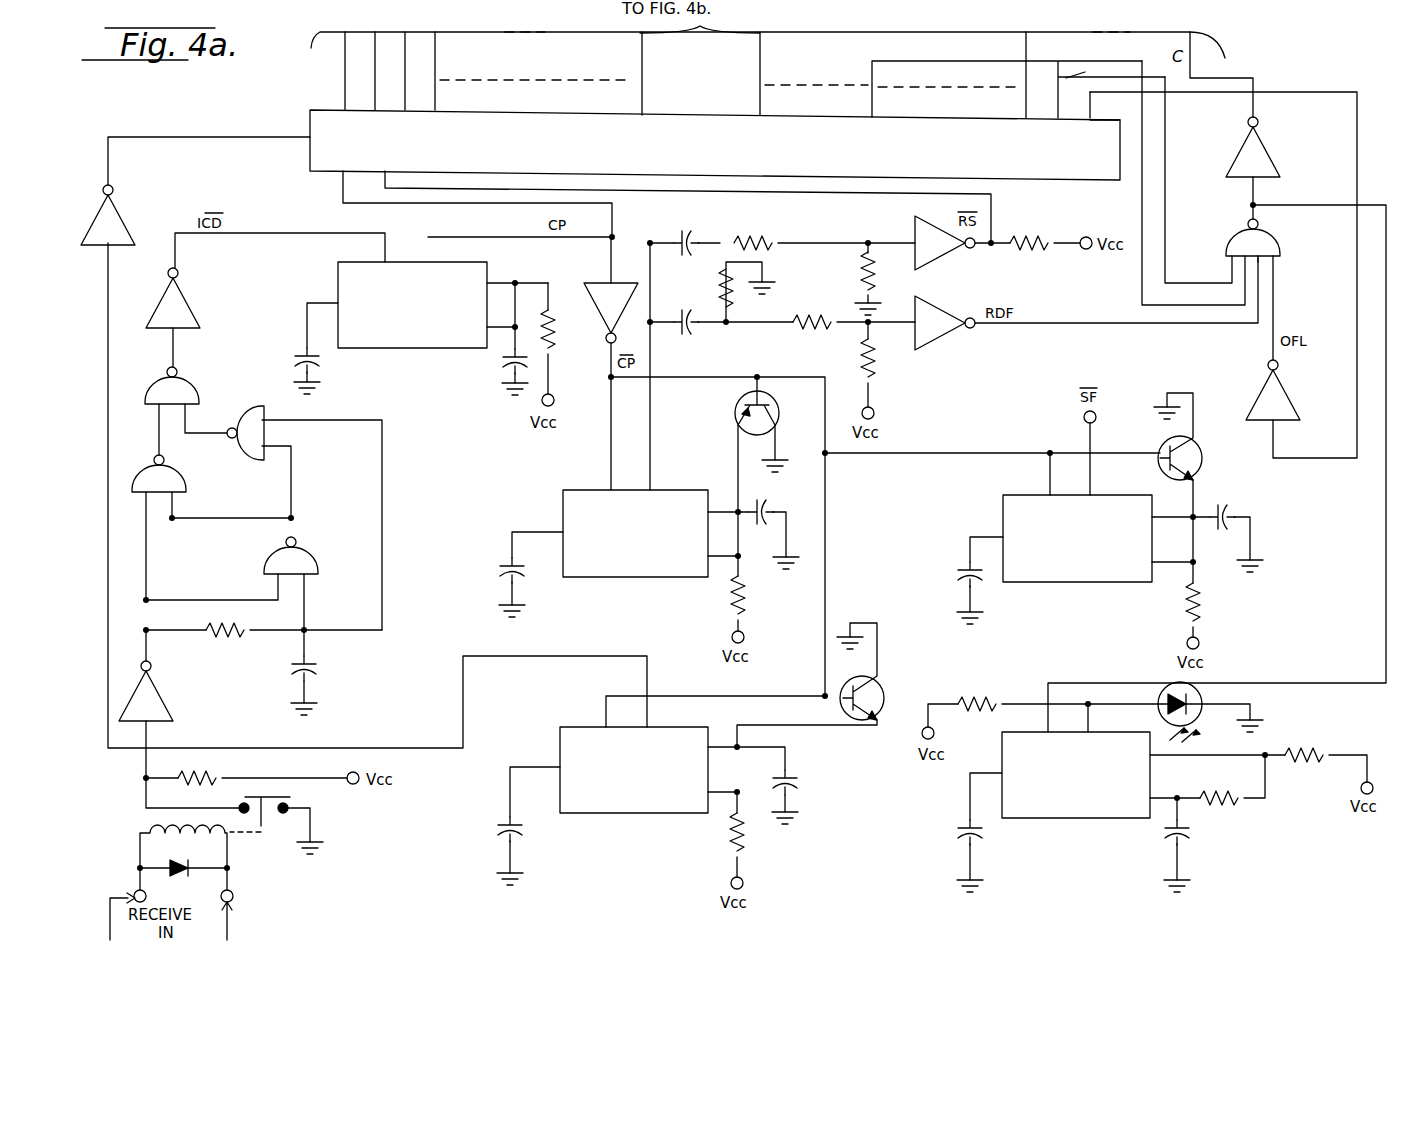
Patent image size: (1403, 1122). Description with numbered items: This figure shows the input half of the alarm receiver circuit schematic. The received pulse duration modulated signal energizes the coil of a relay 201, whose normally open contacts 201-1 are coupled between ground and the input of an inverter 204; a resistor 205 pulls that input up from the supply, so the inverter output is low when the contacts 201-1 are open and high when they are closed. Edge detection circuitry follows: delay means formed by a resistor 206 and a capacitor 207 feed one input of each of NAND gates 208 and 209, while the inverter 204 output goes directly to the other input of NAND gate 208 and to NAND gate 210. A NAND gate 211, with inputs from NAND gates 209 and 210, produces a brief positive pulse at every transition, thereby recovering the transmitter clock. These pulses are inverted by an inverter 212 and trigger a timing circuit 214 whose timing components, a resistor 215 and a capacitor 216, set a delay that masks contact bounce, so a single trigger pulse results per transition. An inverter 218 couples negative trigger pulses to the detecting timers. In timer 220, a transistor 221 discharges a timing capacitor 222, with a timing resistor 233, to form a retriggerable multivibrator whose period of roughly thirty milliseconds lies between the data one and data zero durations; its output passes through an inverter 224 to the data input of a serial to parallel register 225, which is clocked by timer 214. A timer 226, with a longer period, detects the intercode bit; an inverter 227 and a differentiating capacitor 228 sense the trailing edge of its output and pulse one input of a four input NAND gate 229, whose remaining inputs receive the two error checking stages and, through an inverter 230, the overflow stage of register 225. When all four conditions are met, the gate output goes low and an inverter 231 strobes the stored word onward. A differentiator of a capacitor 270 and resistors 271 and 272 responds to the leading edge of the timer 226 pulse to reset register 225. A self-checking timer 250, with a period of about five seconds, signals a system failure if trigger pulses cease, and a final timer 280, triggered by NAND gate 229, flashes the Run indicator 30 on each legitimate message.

The Run indicator 30 is at (1163, 688).
The relay 201 is at (205, 843).
The normally open contacts 201-1 is at (263, 798).
The inverter 204 is at (168, 716).
The resistor 205 is at (205, 775).
The resistor 206 is at (222, 637).
The capacitor 207 is at (322, 668).
The NAND gate 208 is at (303, 556).
The NAND gate 209 is at (233, 452).
The NAND gate 210 is at (185, 482).
The NAND gate 211 is at (190, 392).
The inverter 212 is at (185, 300).
The timing circuit 214 is at (358, 348).
The resistor 215 is at (553, 340).
The capacitor 216 is at (484, 362).
The inverter 218 is at (585, 281).
The timer 220 is at (566, 726).
The transistor 221 is at (880, 690).
The timing capacitor 222 is at (800, 780).
The inverter 224 is at (117, 202).
The register 225 is at (310, 120).
The timer 226 is at (565, 490).
The inverter 227 is at (950, 340).
The differentiating capacitor 228 is at (692, 330).
The four input NAND gate 229 is at (1280, 248).
The inverter 230 is at (1288, 402).
The inverter 231 is at (1278, 153).
The resistor 233 is at (732, 833).
The timer 250 is at (1003, 496).
The capacitor 270 is at (688, 238).
The resistor 271 is at (752, 240).
The resistor 272 is at (864, 274).
The final timer 280 is at (1065, 818).